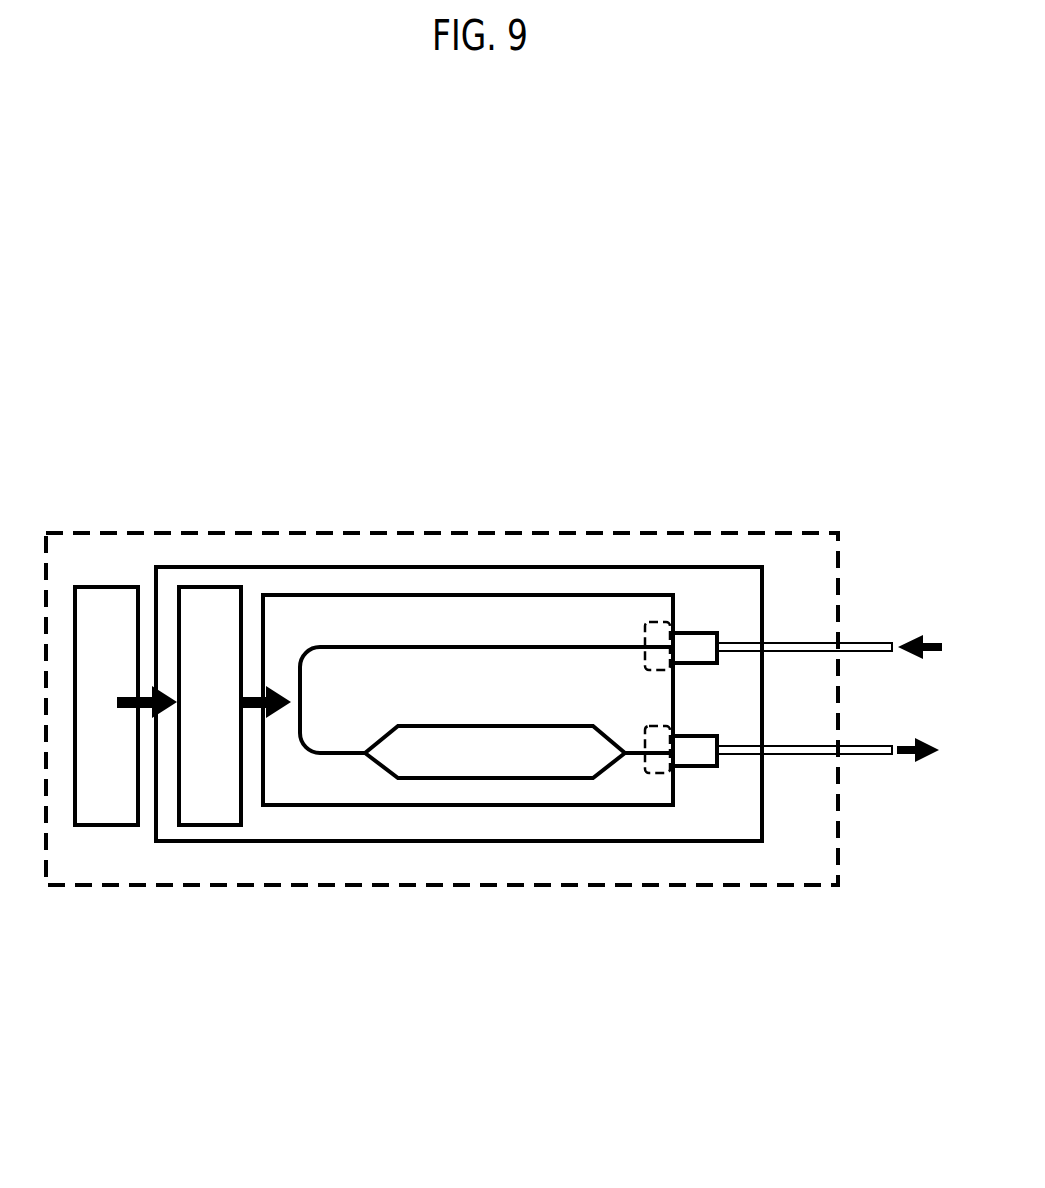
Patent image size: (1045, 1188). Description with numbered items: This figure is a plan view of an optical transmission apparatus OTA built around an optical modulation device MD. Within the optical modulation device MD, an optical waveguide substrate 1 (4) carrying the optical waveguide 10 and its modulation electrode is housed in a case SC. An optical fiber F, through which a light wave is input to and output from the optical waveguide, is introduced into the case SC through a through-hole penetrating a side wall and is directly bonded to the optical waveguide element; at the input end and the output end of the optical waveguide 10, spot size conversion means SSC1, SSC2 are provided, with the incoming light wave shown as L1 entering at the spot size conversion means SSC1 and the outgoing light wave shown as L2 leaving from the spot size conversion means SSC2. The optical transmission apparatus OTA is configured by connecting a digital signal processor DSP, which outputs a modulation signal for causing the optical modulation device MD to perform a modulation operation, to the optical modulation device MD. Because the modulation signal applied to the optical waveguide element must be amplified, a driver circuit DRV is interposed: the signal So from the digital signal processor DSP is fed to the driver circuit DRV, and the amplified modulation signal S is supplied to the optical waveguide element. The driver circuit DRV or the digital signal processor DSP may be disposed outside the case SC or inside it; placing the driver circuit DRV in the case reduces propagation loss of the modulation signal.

The optical transmission apparatus OTA is at (213, 885).
The optical modulation device MD is at (423, 842).
The case SC is at (518, 566).
The digital signal processor DSP is at (103, 590).
The driver circuit DRV is at (208, 590).
The input signal So is at (137, 691).
The drive signal S is at (265, 691).
The optical waveguide substrate 1 is at (486, 715).
The optical waveguide substrate 4 is at (486, 803).
The optical waveguide 10 is at (533, 779).
The spot size conversion means SSC1 is at (657, 622).
The spot size conversion means SSC2 is at (660, 773).
The optical fiber F is at (817, 642).
The input light L1 is at (922, 627).
The output light L2 is at (921, 766).